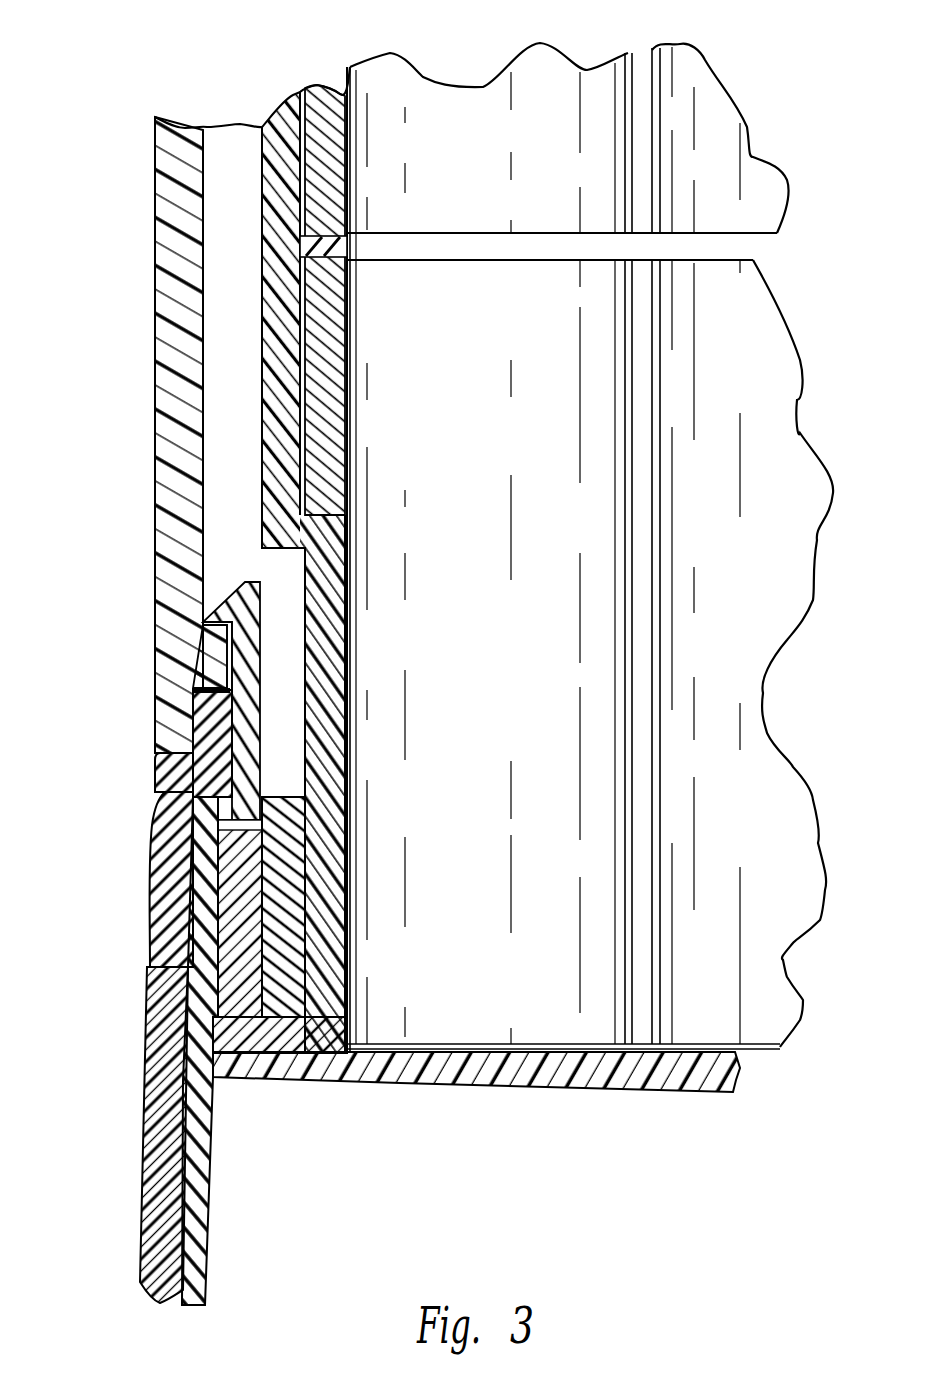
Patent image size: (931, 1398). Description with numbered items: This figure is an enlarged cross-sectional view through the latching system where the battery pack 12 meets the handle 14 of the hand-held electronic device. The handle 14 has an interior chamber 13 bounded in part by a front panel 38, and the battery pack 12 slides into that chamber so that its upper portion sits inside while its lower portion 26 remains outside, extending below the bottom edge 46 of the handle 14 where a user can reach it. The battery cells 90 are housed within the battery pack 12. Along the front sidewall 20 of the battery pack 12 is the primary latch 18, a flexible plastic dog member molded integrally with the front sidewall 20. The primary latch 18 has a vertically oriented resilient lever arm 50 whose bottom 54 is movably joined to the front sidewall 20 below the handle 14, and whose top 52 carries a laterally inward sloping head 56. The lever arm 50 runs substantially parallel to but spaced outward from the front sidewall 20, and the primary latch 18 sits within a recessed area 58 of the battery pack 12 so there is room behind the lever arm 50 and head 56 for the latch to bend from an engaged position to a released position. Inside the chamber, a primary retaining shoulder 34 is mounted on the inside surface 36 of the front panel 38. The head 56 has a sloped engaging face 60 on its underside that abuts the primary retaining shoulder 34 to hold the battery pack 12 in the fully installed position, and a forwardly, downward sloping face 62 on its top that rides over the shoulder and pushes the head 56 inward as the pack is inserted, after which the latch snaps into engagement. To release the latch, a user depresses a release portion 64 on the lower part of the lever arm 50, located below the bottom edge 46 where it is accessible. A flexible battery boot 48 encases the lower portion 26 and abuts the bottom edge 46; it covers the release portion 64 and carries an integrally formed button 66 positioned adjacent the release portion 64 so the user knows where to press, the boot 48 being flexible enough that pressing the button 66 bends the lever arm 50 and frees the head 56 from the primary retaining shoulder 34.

The battery pack 12 is at (280, 250).
The interior chamber 13 is at (233, 287).
The handle 14 is at (128, 323).
The primary latch 18 is at (157, 745).
The front sidewall 20 is at (263, 380).
The lower portion 26 is at (210, 1060).
The primary retaining shoulder 34 is at (190, 631).
The inside surface 36 is at (140, 489).
The front panel 38 is at (83, 490).
The bottom edge 46 is at (160, 790).
The battery boot 48 is at (158, 1217).
The lever arm 50 is at (245, 745).
The top 52 is at (250, 637).
The bottom 54 is at (160, 962).
The head 56 is at (200, 632).
The recessed area 58 is at (280, 575).
The engaging face 60 is at (192, 668).
The downward sloping face 62 is at (225, 600).
The release portion 64 is at (157, 847).
The button 66 is at (140, 900).
The battery cells 90 is at (393, 103).